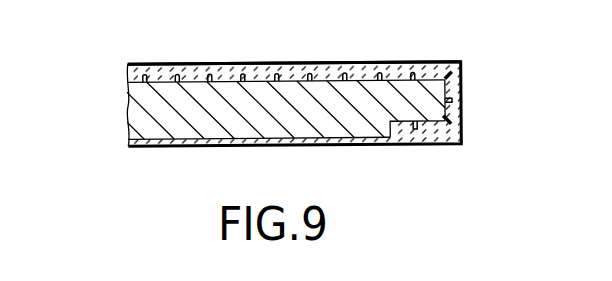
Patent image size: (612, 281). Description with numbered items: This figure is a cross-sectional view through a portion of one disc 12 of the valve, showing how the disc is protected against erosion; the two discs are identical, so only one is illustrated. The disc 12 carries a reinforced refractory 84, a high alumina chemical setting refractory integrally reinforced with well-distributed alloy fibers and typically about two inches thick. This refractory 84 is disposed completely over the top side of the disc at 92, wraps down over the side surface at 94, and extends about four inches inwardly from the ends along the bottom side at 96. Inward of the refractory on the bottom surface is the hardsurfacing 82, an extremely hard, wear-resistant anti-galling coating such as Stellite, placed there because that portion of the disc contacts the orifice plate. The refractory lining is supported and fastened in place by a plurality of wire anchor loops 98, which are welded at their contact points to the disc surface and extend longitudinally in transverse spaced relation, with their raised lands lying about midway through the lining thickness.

The disc 12 is at (126, 124).
The hardsurfacing 82 is at (183, 145).
The reinforced refractory 84 is at (405, 68).
The top side refractory 92 is at (205, 63).
The side surface refractory 94 is at (461, 120).
The bottom side refractory 96 is at (435, 145).
The wire anchor loops 98 is at (279, 68).